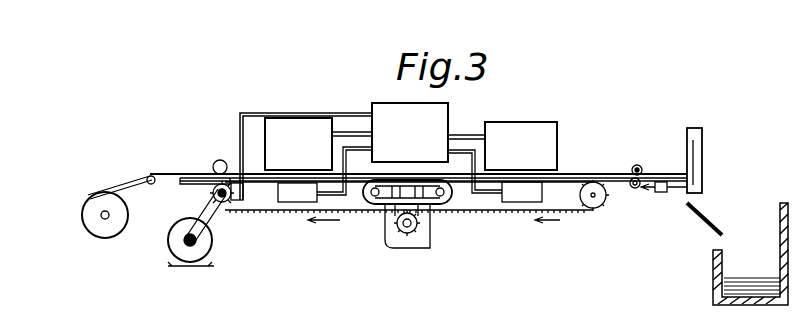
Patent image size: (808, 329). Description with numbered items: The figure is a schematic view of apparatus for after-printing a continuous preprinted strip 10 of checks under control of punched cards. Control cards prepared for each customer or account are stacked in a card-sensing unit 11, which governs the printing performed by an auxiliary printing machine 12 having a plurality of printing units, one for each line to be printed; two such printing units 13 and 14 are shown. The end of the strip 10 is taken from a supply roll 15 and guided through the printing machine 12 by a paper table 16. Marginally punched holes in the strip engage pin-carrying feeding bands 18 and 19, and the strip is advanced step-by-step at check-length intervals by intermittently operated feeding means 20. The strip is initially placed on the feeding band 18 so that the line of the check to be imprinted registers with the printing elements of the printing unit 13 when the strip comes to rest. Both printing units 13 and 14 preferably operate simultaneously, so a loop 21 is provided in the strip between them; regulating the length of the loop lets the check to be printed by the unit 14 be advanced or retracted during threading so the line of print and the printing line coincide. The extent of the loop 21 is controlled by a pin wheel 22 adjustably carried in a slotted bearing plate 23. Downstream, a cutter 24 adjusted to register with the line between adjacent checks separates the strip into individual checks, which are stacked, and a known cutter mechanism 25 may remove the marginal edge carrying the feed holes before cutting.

The continuous preprinted strip 10 is at (162, 173).
The card-sensing unit 11 is at (440, 112).
The auxiliary printing machine 12 is at (258, 130).
The printing unit 13 is at (274, 128).
The printing unit 14 is at (537, 128).
The supply roll 15 is at (97, 231).
The paper table 16 is at (184, 182).
The pin-carrying feeding band 18 is at (295, 212).
The pin-carrying feeding band 19 is at (480, 212).
The intermittently operated feeding means 20 is at (223, 222).
The loop 21 is at (390, 215).
The pin wheel 22 is at (402, 234).
The slotted bearing plate 23 is at (422, 244).
The cutter 24 is at (697, 160).
The cutter mechanism 25 is at (633, 164).